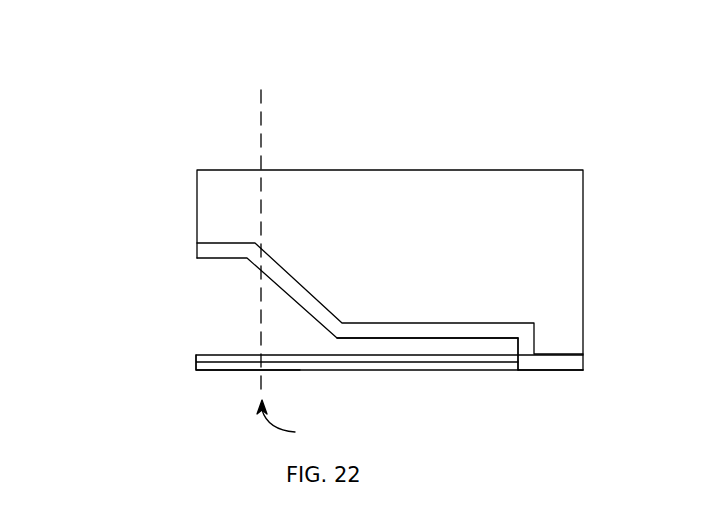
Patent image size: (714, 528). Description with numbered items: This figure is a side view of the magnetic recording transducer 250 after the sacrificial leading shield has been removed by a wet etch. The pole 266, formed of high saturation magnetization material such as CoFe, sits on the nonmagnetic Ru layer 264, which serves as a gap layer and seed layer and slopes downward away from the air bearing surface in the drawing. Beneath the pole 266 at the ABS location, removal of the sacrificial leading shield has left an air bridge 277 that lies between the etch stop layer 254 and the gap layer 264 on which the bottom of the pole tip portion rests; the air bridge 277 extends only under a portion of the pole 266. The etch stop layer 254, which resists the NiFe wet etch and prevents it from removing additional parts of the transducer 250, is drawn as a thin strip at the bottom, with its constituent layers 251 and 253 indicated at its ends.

The transducer 250 is at (345, 68).
The pole 266 is at (197, 202).
The Ru layer 264 is at (197, 249).
The air bridge 277 is at (203, 331).
The etch stop layer 254 is at (147, 362).
The etch stop layer portion 251 is at (196, 366).
The etch stop layer portion 253 is at (518, 359).